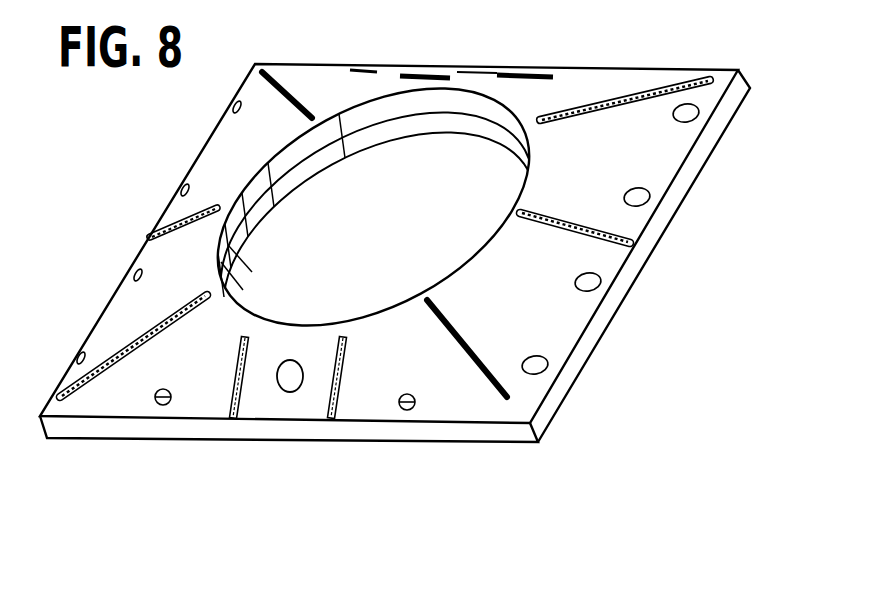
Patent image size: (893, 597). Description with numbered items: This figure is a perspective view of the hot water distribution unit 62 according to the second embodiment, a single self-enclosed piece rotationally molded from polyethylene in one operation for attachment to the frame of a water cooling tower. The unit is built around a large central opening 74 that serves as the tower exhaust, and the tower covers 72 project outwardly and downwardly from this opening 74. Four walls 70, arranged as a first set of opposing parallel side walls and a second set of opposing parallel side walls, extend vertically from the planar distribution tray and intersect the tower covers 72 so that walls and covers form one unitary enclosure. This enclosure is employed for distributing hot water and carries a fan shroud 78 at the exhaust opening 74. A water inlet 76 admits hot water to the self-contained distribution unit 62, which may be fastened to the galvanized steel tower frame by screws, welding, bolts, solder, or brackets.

The hot water distribution unit 62 is at (722, 52).
The walls 70 is at (579, 66).
The tower covers 72 is at (515, 305).
The opening 74 is at (407, 228).
The water inlet 76 is at (304, 382).
The fan shroud 78 is at (448, 90).